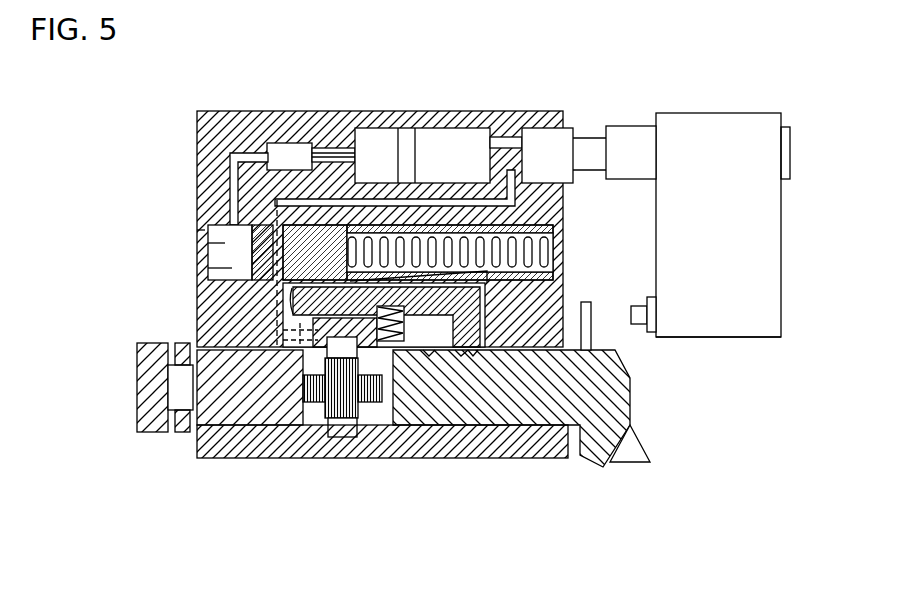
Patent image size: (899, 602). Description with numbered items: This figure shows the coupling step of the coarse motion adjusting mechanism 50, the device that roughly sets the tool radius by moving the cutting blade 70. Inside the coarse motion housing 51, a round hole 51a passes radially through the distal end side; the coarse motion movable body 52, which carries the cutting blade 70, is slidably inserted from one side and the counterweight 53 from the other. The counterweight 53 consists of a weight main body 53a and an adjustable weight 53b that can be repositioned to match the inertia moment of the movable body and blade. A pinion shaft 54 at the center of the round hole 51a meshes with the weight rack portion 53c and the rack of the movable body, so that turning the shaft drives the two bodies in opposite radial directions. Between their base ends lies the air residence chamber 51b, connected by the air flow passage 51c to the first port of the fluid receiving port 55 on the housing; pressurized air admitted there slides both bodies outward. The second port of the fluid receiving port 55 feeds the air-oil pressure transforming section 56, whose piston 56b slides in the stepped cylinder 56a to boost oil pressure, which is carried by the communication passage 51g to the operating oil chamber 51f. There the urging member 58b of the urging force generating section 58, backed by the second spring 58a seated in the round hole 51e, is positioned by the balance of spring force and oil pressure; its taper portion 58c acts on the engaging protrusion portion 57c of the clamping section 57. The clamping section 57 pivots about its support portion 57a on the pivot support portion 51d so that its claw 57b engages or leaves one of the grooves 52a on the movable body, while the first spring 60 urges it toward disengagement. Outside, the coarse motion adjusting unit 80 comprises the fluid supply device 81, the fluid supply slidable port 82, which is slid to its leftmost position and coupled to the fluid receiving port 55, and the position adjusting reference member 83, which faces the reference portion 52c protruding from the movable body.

The coarse motion adjusting mechanism 50 is at (541, 99).
The coarse motion housing 51 is at (512, 110).
The round hole 51a is at (248, 422).
The air residence chamber 51b is at (386, 440).
The air flow passage 51c is at (512, 203).
The pivot support portion 51d is at (208, 268).
The round hole 51e is at (197, 230).
The operating oil chamber 51f is at (208, 243).
The communication passage 51g is at (233, 162).
The coarse motion movable body 52 is at (518, 407).
The grooves 52a is at (448, 403).
The reference portion 52c is at (614, 353).
The counterweight 53 is at (120, 418).
The weight main body 53a is at (181, 432).
The adjustable weight 53b is at (152, 433).
The weight rack portion 53c is at (312, 402).
The pinion shaft 54 is at (340, 437).
The fluid receiving port 55 is at (576, 130).
The air-oil pressure transforming section 56 is at (372, 118).
The stepped cylinder 56a is at (291, 141).
The piston 56b is at (425, 128).
The clamping section 57 is at (487, 295).
The support portion 57a is at (300, 292).
The claw 57b is at (392, 352).
The engaging protrusion portion 57c is at (440, 277).
The urging force generating section 58 is at (290, 202).
The second spring 58a is at (523, 243).
The urging member 58b is at (260, 253).
The taper portion 58c is at (290, 328).
The first spring 60 is at (398, 402).
The cutting blade 70 is at (636, 465).
The coarse motion adjusting unit 80 is at (714, 102).
The fluid supply device 81 is at (760, 338).
The fluid supply slidable port 82 is at (638, 126).
The position adjusting reference member 83 is at (647, 333).